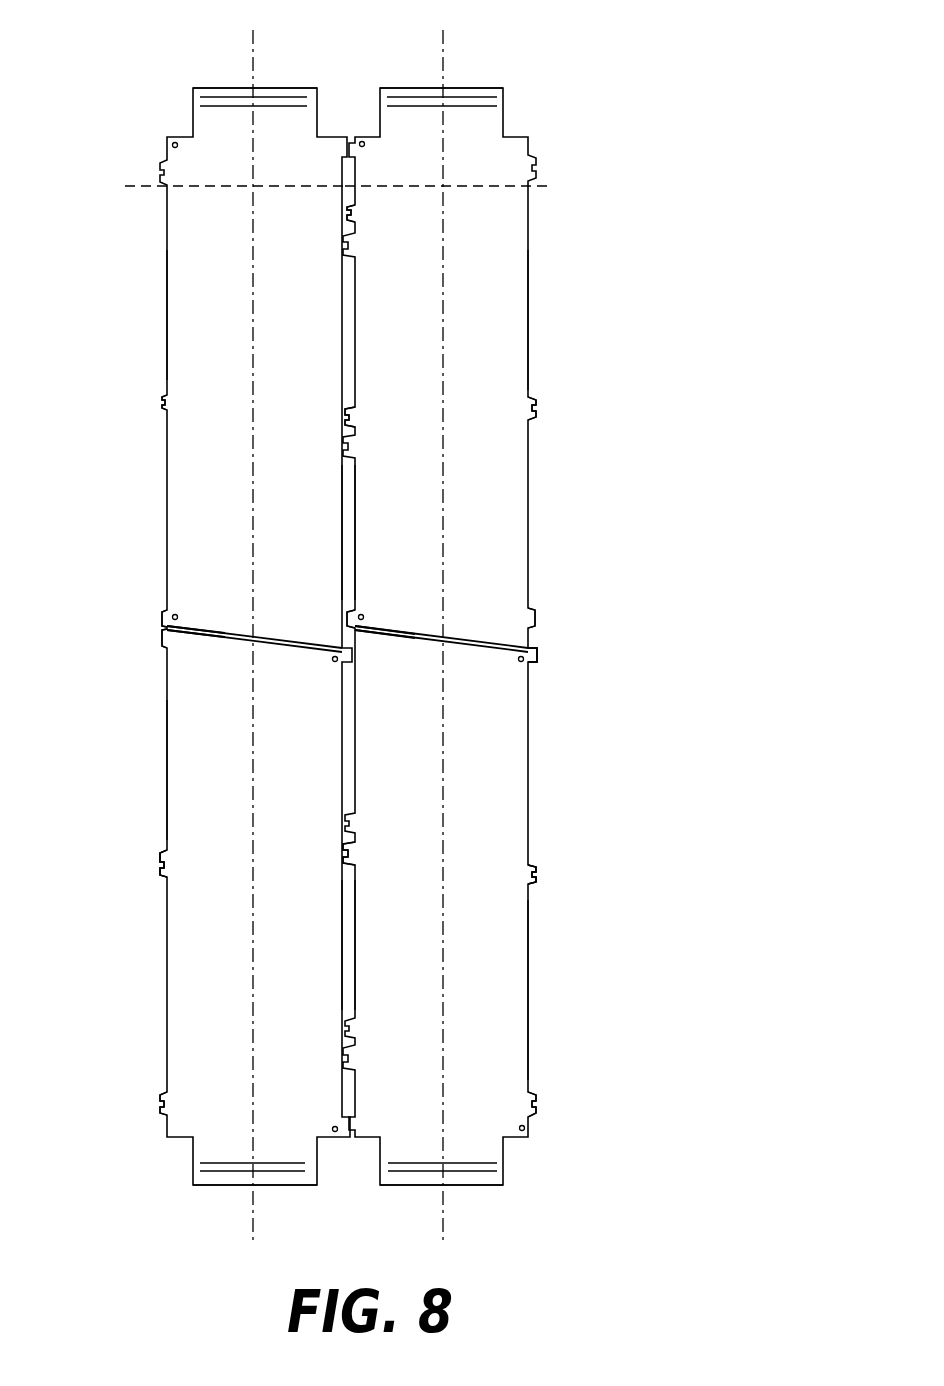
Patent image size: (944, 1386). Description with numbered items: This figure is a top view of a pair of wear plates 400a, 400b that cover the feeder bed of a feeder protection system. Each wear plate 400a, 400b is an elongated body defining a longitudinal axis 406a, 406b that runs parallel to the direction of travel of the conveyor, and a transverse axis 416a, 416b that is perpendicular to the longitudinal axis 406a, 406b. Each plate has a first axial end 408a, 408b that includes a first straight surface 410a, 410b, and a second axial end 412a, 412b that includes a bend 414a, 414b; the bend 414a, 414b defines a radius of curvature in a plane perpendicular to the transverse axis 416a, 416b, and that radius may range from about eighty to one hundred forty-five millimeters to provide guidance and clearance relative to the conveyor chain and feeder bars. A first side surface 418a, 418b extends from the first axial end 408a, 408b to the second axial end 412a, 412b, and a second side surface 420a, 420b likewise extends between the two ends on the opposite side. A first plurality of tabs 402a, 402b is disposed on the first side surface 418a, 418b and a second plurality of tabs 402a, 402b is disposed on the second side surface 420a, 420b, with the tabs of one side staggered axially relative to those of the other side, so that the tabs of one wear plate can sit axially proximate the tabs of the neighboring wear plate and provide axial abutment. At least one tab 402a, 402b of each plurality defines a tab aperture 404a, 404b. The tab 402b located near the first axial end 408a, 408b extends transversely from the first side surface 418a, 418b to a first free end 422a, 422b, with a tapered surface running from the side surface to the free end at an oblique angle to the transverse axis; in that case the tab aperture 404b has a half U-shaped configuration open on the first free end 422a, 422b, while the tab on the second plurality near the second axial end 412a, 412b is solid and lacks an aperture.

The wear plate 400a is at (198, 247).
The wear plate 400b is at (509, 512).
The tab 402a is at (361, 216).
The tab 402b is at (157, 605).
The tab aperture 404a is at (160, 862).
The tab aperture 404b is at (538, 648).
The longitudinal axis 406a is at (254, 42).
The longitudinal axis 406b is at (443, 273).
The first axial end 408a is at (292, 636).
The first axial end 408b is at (478, 636).
The first straight surface 410a is at (218, 624).
The first straight surface 410b is at (408, 627).
The second axial end 412a is at (212, 80).
The second axial end 412b is at (470, 80).
The bend 414a is at (313, 103).
The bend 414b is at (504, 97).
The transverse axis 416a is at (295, 188).
The transverse axis 416b is at (514, 186).
The first side surface 418a is at (167, 322).
The first side surface 418b is at (528, 350).
The second side surface 420a is at (342, 485).
The second side surface 420b is at (355, 488).
The first free end 422a is at (160, 403).
The first free end 422b is at (537, 415).